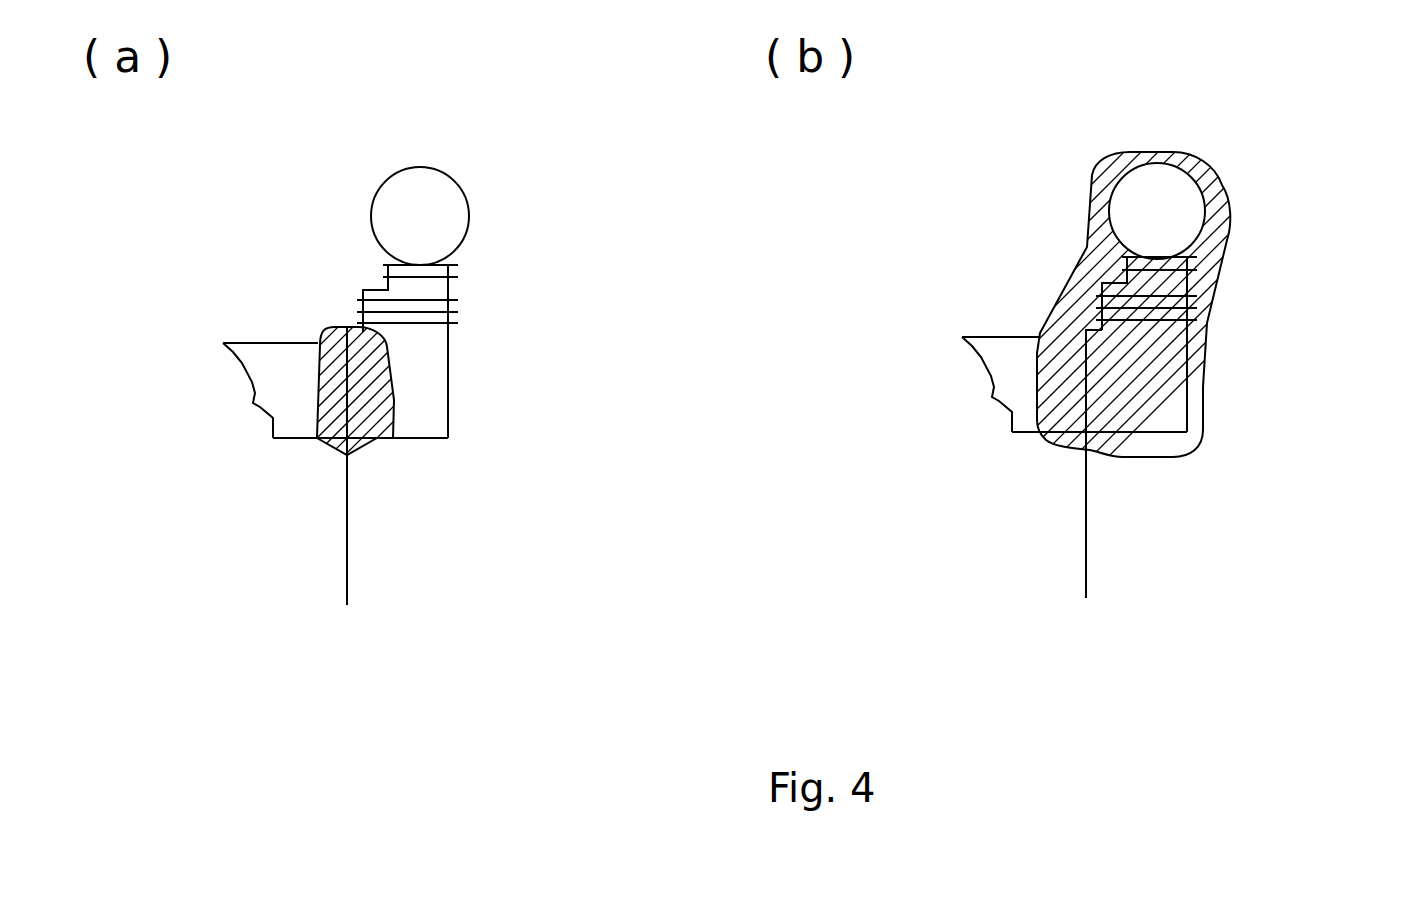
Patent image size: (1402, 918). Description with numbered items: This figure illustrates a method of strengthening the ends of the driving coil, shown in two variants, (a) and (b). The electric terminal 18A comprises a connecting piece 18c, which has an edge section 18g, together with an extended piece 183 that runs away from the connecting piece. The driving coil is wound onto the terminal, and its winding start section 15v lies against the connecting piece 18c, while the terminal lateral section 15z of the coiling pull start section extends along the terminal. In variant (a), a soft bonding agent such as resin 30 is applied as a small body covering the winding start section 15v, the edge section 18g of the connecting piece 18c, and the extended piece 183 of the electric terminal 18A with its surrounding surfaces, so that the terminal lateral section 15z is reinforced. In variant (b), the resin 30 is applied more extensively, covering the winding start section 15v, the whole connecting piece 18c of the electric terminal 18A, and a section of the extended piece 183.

The electric terminal 18A is at (253, 342).
The extended piece 183 is at (278, 388).
The connecting piece 18c is at (400, 287).
The edge section 18g is at (278, 343).
The winding start section 15v is at (367, 363).
The resin 30 is at (390, 363).
The terminal lateral section 15z is at (347, 578).